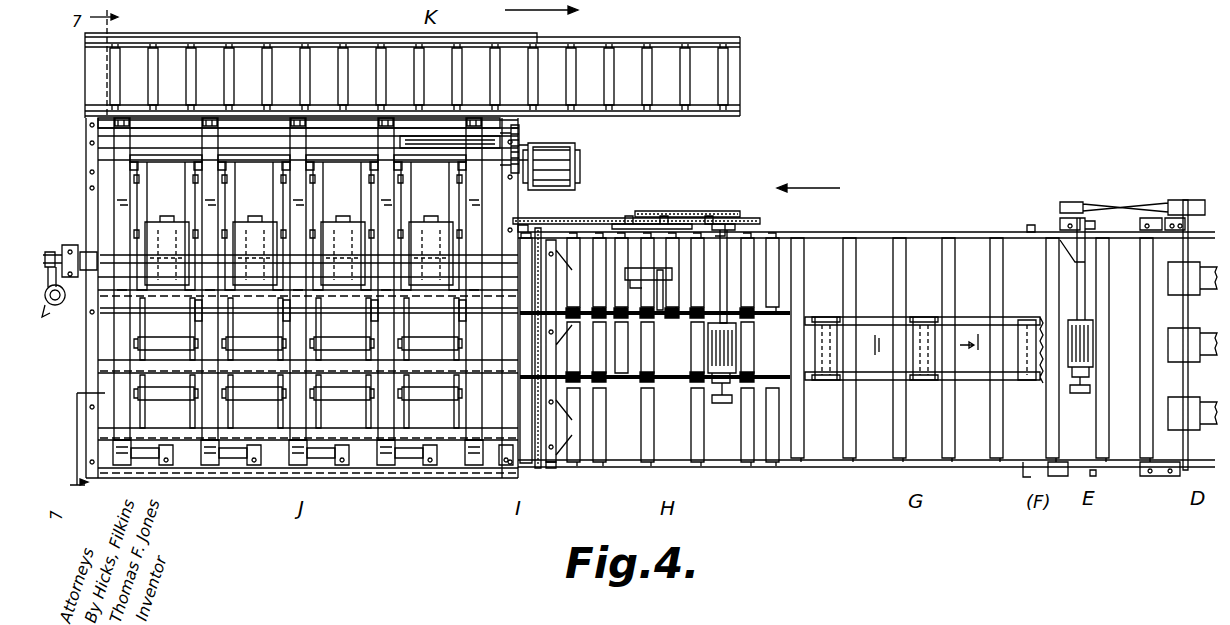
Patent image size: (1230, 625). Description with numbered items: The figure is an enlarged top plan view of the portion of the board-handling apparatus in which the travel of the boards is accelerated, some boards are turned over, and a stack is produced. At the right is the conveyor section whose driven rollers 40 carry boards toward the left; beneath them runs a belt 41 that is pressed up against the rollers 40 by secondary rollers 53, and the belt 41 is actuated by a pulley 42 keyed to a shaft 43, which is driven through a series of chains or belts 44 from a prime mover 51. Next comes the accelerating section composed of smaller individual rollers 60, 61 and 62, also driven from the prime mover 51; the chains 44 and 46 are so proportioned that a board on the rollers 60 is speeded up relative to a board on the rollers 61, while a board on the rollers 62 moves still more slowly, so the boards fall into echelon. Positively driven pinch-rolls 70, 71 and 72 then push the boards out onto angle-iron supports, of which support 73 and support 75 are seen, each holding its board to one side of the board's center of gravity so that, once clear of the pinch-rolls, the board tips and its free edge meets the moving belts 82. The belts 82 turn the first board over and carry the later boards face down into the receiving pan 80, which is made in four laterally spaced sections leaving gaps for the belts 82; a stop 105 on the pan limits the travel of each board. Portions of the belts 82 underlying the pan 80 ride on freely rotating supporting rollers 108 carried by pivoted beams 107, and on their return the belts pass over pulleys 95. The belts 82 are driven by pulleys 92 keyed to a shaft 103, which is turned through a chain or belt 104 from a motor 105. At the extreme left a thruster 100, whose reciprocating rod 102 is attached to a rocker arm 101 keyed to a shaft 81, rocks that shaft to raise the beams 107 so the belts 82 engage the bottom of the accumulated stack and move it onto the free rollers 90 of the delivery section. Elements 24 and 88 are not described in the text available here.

The free rollers 90 is at (155, 76).
The driven rollers 92 is at (428, 114).
The shaft 103 is at (450, 139).
The chain or belt 104 is at (520, 146).
The motor 105 is at (566, 148).
The belts 82 is at (132, 183).
The beams 107 is at (137, 222).
The supporting rollers 108 is at (149, 197).
The receiving pan 80 is at (173, 221).
The rocker arm 101 is at (50, 252).
The shaft 81 is at (70, 245).
The thruster 100 is at (68, 295).
The reciprocating rod 102 is at (53, 305).
The angle-iron support 73 is at (434, 294).
The roller 24 is at (418, 356).
The roller 88 is at (328, 390).
The angle-iron support 75 is at (421, 430).
The pulleys 95 is at (186, 457).
The pinch-rolls 70 is at (528, 238).
The pinch-rolls 71 is at (524, 349).
The pinch-rolls 72 is at (524, 429).
The belt or chain 46 is at (598, 218).
The chains or belts 44 is at (664, 211).
The rollers 60 is at (702, 236).
The rollers 61 is at (570, 333).
The rollers 62 is at (570, 409).
The prime mover 51 is at (660, 314).
The shaft 43 is at (728, 235).
The pulley 42 is at (720, 385).
The driven rollers 40 is at (945, 232).
The belt 41 is at (962, 325).
The secondary rollers 53 is at (824, 317).